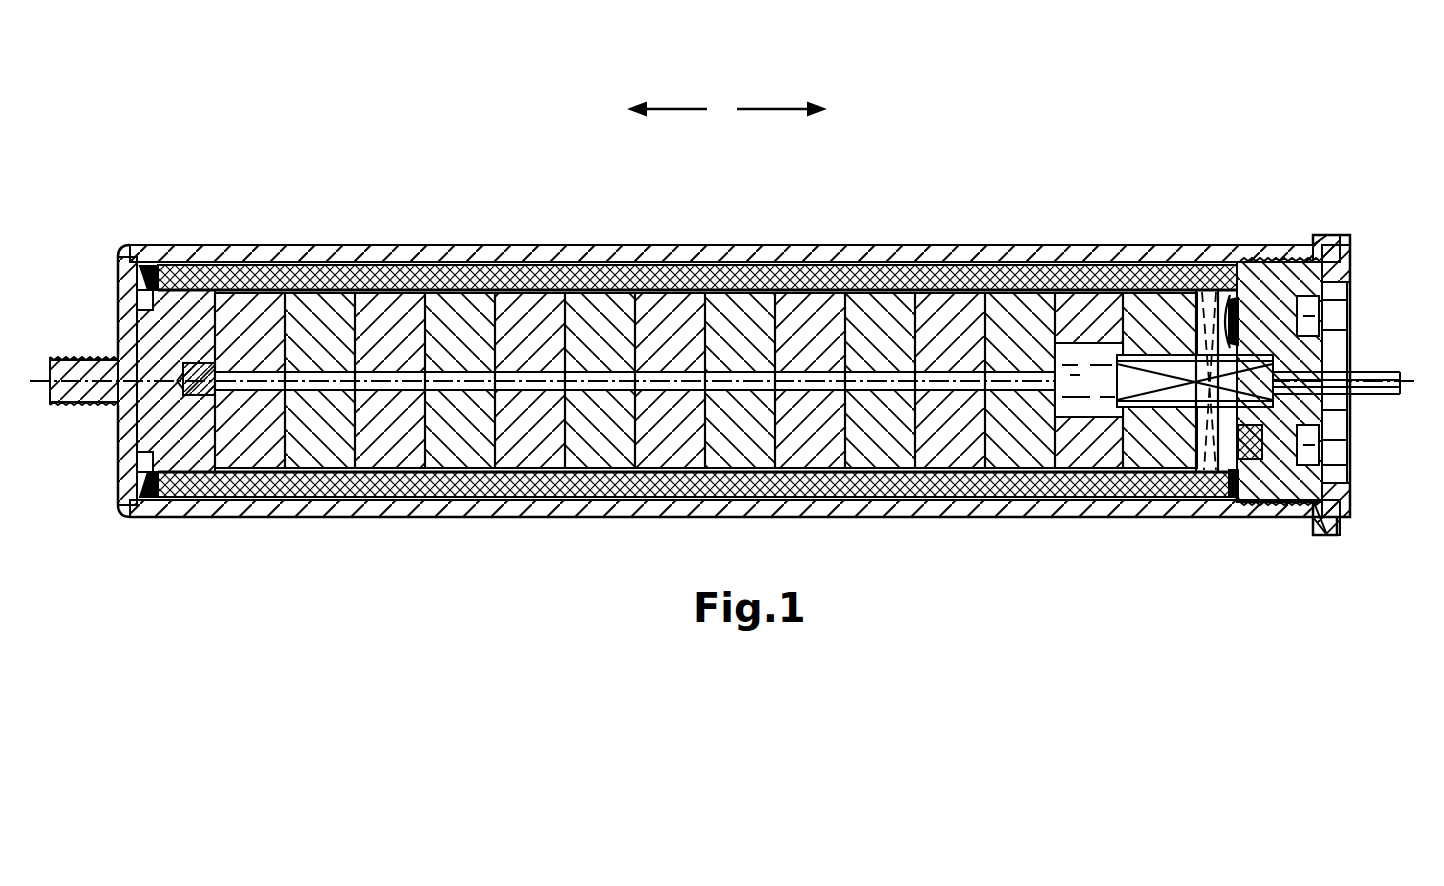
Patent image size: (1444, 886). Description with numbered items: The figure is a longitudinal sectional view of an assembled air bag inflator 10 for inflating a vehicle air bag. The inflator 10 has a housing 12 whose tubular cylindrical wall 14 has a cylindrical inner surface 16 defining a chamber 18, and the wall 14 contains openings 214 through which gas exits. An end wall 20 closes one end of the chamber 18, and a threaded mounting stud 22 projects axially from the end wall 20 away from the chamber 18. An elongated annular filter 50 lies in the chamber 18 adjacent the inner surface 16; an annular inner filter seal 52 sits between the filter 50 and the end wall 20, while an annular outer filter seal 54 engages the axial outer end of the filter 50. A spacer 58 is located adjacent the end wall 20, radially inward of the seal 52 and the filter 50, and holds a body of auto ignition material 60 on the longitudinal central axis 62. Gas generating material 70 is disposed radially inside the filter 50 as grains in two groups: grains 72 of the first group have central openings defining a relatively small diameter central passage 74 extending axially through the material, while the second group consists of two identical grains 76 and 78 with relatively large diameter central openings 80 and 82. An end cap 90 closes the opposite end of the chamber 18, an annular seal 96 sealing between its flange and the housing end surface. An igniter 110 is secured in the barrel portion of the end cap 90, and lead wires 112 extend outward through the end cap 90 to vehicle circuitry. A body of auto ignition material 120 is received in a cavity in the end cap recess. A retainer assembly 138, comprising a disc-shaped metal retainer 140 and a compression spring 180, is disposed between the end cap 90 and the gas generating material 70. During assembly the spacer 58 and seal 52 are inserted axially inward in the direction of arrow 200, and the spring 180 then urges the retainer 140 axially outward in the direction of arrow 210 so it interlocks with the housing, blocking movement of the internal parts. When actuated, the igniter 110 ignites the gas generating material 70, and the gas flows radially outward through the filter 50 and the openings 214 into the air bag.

The inflator 10 is at (518, 140).
The housing 12 is at (621, 240).
The tubular cylindrical wall 14 is at (527, 245).
The cylindrical inner surface 16 is at (398, 268).
The chamber 18 is at (1067, 265).
The end wall 20 is at (127, 320).
The threaded mounting stud 22 is at (74, 408).
The filter 50 is at (303, 270).
The inner filter seal 52 is at (143, 270).
The outer filter seal 54 is at (1220, 472).
The spacer 58 is at (190, 322).
The body of auto ignition material 60 is at (197, 392).
The longitudinal central axis 62 is at (1410, 388).
The gas generating material 70 is at (520, 472).
The grains 72 is at (305, 440).
The central passage 74 is at (693, 392).
The grain 76 is at (1100, 450).
The grain 78 is at (1172, 470).
The central opening 80 is at (1072, 407).
The central opening 82 is at (1133, 415).
The end cap 90 is at (1358, 461).
The annular seal 96 is at (1322, 530).
The igniter 110 is at (1150, 360).
The lead wires 112 is at (1355, 372).
The body of auto ignition material 120 is at (1262, 463).
The retainer assembly 138 is at (1245, 325).
The retainer 140 is at (1240, 310).
The compression spring 180 is at (1198, 292).
The arrow 200 is at (668, 97).
The arrow 210 is at (780, 97).
The openings 214 is at (677, 245).